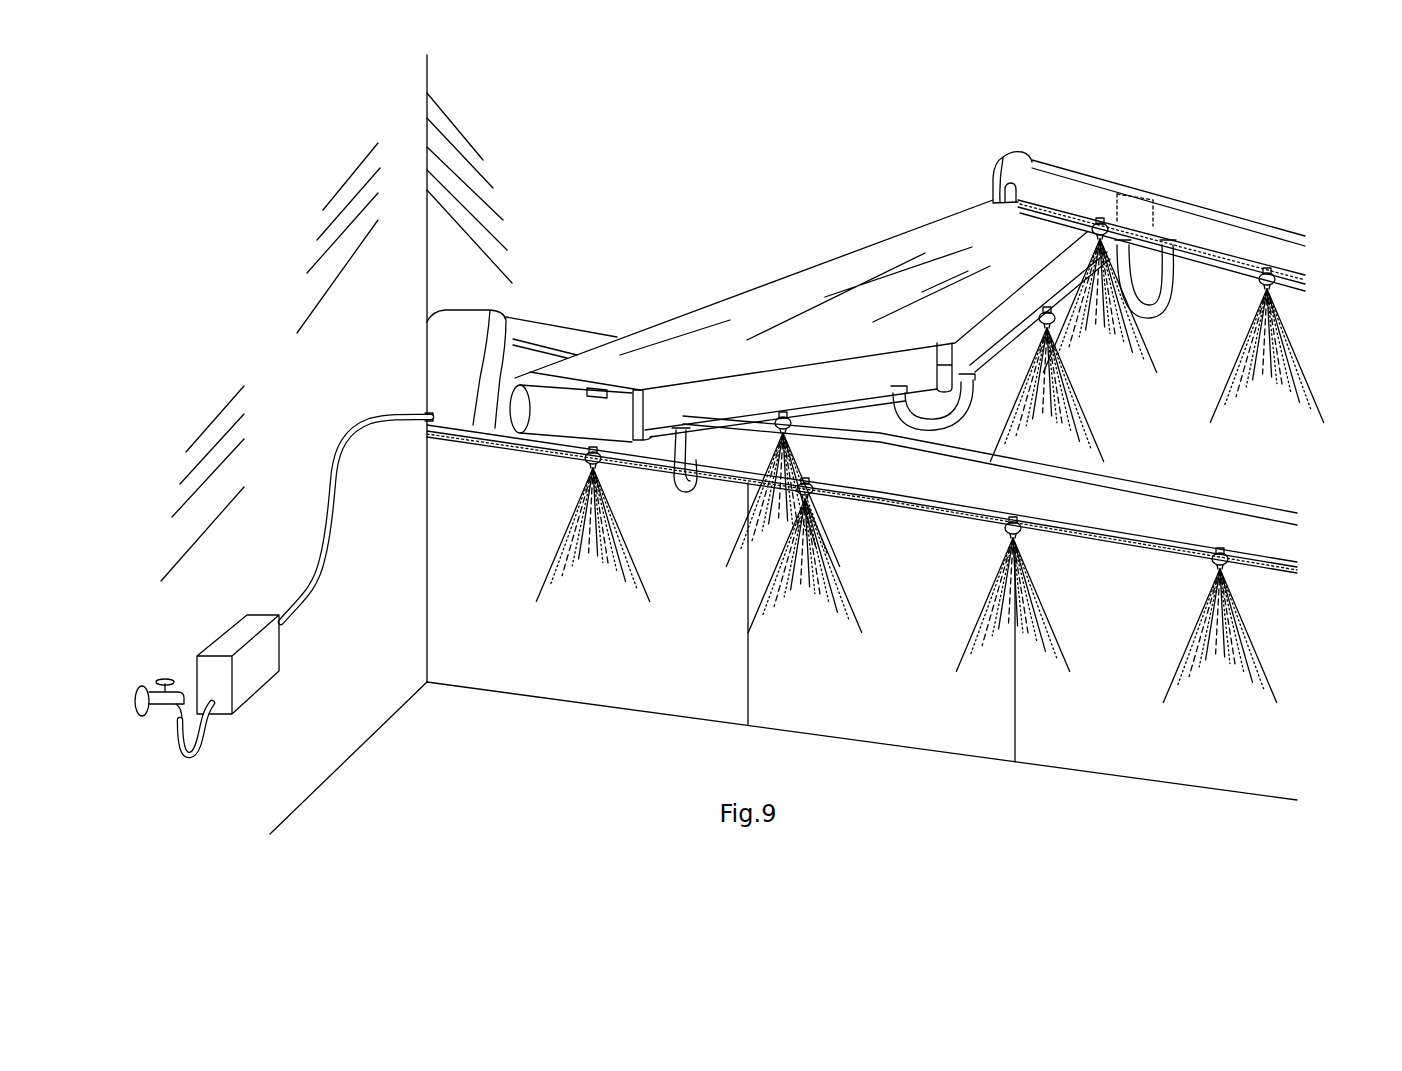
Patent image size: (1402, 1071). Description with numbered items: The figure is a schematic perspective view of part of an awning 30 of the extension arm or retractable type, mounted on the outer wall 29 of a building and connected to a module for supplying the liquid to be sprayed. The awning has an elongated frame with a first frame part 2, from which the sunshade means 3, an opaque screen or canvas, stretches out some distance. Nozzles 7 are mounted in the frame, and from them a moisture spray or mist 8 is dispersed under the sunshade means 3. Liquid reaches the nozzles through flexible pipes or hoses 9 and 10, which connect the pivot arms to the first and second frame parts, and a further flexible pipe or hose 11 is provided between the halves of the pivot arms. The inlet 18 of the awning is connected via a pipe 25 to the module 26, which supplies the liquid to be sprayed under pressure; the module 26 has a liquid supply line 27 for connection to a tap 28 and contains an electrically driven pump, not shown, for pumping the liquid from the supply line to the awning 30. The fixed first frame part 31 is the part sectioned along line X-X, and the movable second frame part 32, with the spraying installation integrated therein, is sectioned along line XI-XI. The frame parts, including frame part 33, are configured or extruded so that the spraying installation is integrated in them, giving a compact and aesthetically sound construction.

The first frame part 2 is at (490, 412).
The sunshade means 3 is at (810, 266).
The nozzles 7 is at (598, 468).
The moisture spray or mist 8 is at (545, 570).
The flexible pipe or hose 9 is at (689, 492).
The flexible pipe or hose 10 is at (1175, 302).
The flexible pipe or hose 11 is at (960, 428).
The inlet 18 is at (422, 411).
The pipe 25 is at (330, 500).
The module 26 is at (242, 630).
The liquid supply line 27 is at (216, 735).
The tap 28 is at (156, 690).
The outer wall 29 is at (518, 122).
The awning 30 is at (670, 260).
The fixed first frame part 31 is at (440, 322).
The movable second frame part 32 is at (1010, 167).
The frame part 33 is at (867, 383).